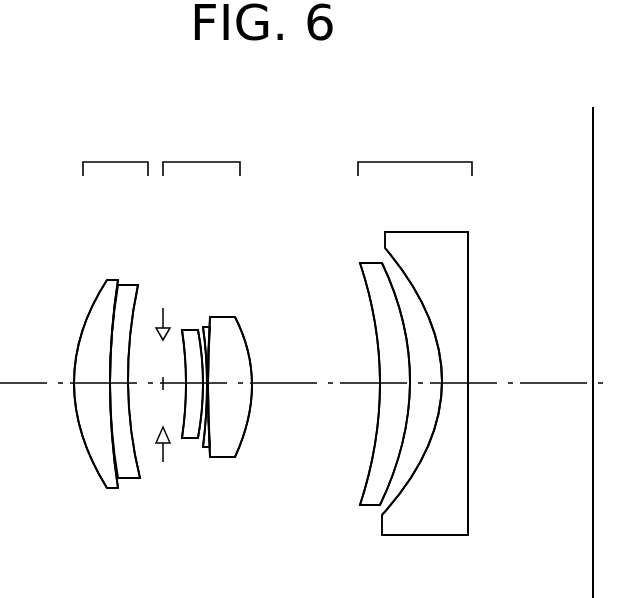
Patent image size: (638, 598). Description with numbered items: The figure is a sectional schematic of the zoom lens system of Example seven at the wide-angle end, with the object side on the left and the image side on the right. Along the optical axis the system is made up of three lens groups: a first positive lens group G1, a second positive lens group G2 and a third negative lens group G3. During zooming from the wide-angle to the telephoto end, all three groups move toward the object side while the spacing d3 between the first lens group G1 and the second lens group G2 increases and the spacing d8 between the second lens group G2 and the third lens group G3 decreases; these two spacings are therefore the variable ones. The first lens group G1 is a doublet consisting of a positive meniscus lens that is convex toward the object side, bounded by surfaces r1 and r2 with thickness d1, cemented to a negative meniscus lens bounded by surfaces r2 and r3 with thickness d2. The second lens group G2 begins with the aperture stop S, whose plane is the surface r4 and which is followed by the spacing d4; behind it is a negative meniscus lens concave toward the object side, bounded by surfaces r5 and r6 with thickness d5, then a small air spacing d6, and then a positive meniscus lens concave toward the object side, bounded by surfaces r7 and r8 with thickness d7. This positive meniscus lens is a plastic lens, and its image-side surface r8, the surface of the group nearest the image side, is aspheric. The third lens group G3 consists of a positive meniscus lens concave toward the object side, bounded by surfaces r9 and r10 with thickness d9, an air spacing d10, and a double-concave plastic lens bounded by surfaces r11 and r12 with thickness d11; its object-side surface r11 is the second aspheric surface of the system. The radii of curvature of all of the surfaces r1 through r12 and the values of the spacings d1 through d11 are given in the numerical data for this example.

The first positive lens group G1 is at (115, 149).
The second positive lens group G2 is at (201, 149).
The third negative lens group G3 is at (415, 149).
The aperture stop S is at (163, 312).
The radius of curvature of lens surface r1 is at (89, 311).
The radius of curvature of lens surface r2 is at (113, 318).
The radius of curvature of lens surface r3 is at (134, 318).
The radius of curvature of lens surface r4 is at (178, 350).
The radius of curvature of lens surface r5 is at (190, 345).
The radius of curvature of lens surface r6 is at (204, 335).
The radius of curvature of lens surface r7 is at (213, 340).
The radius of curvature of lens surface r8 is at (245, 345).
The radius of curvature of lens surface r9 is at (366, 300).
The radius of curvature of lens surface r10 is at (385, 278).
The radius of curvature of lens surface r11 is at (402, 268).
The radius of curvature of lens surface r12 is at (469, 272).
The spacing between lens surfaces d1 is at (87, 388).
The spacing between lens surfaces d2 is at (118, 390).
The spacing between lens surfaces d3 is at (149, 411).
The spacing between lens surfaces d4 is at (188, 443).
The spacing between lens surfaces d5 is at (200, 440).
The spacing between lens surfaces d6 is at (204, 440).
The spacing between lens surfaces d7 is at (230, 387).
The spacing between lens surfaces d8 is at (318, 411).
The spacing between lens surfaces d9 is at (396, 398).
The spacing between lens surfaces d10 is at (428, 390).
The spacing between lens surfaces d11 is at (455, 393).